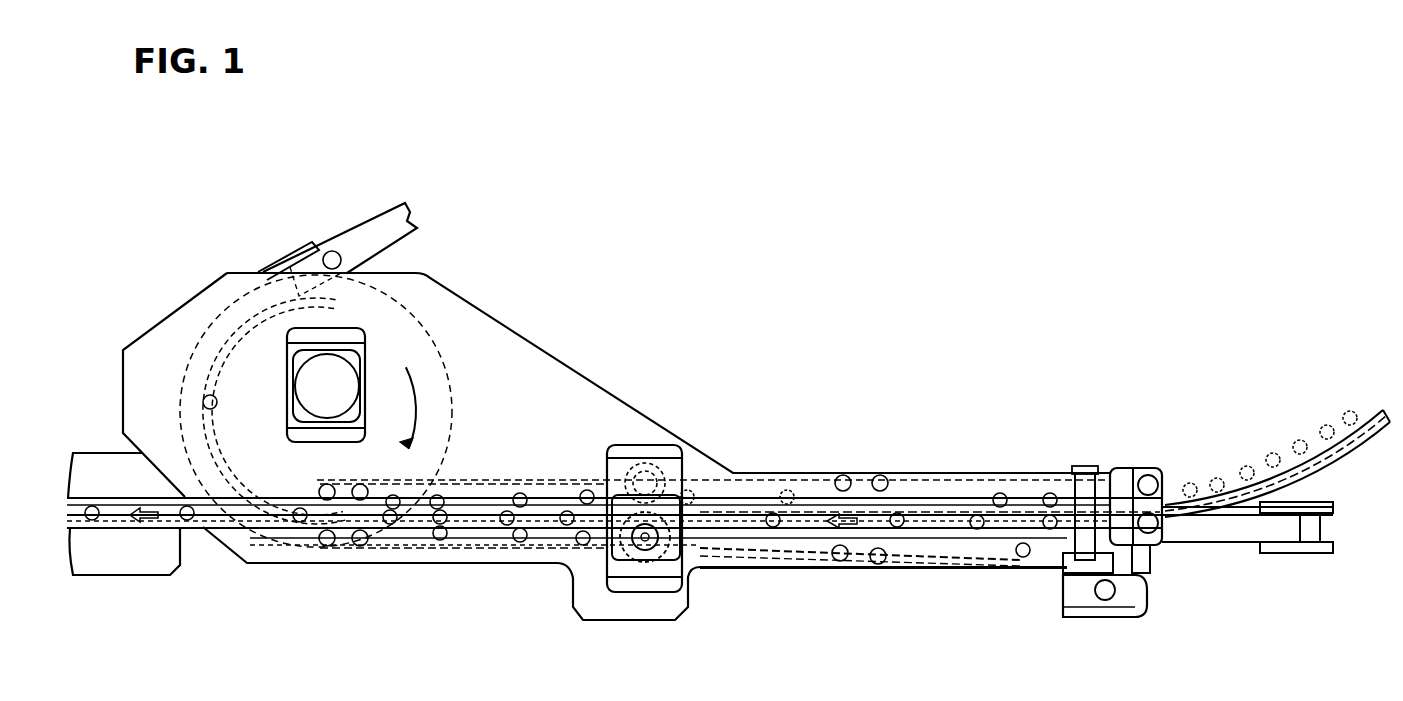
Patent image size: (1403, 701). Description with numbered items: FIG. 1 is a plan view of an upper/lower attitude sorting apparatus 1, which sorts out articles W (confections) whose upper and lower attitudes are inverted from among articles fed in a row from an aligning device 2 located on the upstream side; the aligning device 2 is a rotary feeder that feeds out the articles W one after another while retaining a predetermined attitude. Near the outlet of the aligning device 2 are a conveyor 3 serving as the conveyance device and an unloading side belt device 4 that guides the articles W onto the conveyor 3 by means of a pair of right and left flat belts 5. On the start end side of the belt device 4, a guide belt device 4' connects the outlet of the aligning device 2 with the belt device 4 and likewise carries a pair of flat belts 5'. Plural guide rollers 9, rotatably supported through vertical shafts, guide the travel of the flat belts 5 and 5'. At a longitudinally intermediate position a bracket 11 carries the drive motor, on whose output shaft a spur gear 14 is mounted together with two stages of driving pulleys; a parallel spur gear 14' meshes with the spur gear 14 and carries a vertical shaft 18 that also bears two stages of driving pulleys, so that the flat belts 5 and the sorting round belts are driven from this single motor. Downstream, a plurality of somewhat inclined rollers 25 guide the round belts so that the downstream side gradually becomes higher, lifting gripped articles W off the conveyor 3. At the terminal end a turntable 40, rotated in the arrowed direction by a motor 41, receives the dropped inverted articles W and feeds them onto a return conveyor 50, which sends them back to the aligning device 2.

The upper/lower attitude sorting apparatus 1 is at (498, 462).
The aligning device 2 is at (1247, 440).
The conveyor 3 is at (1245, 540).
The unloading side belt device 4 is at (883, 610).
The guide belt device 4' is at (1112, 479).
The flat belts 5 is at (872, 526).
The flat belts 5' is at (1137, 590).
The guide rollers 9 is at (842, 478).
The bracket 11 is at (690, 570).
The spur gear 14 is at (734, 563).
The spur gear 14' is at (689, 433).
The vertical shaft 18 is at (647, 493).
The inclined rollers 25 is at (515, 530).
The turntable 40 is at (465, 398).
The motor 41 is at (327, 373).
The return conveyor 50 is at (362, 238).
The article W is at (900, 517).